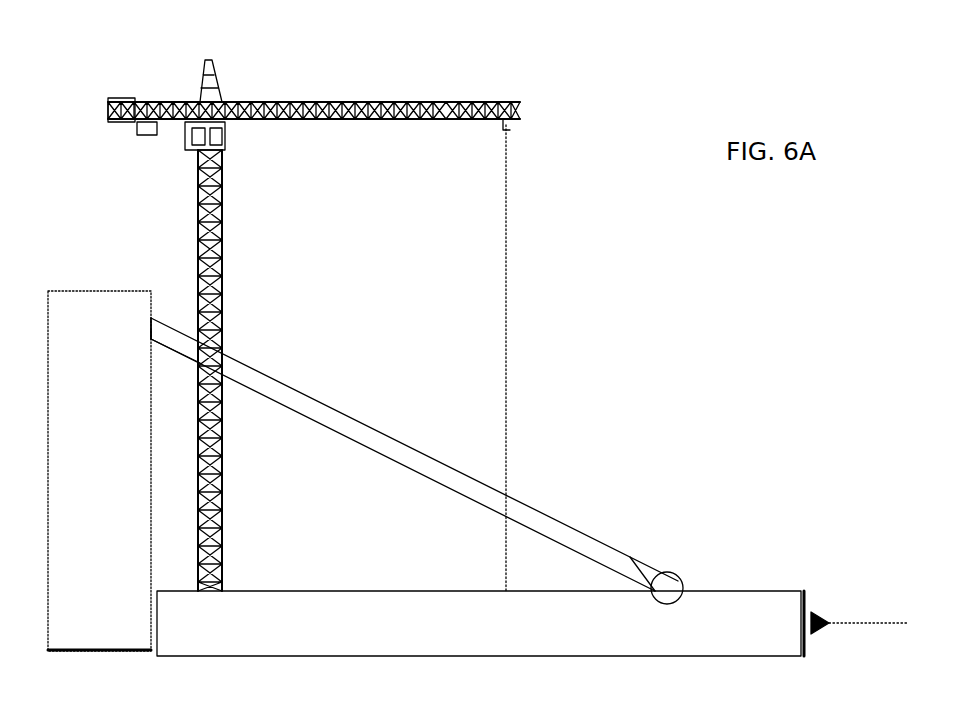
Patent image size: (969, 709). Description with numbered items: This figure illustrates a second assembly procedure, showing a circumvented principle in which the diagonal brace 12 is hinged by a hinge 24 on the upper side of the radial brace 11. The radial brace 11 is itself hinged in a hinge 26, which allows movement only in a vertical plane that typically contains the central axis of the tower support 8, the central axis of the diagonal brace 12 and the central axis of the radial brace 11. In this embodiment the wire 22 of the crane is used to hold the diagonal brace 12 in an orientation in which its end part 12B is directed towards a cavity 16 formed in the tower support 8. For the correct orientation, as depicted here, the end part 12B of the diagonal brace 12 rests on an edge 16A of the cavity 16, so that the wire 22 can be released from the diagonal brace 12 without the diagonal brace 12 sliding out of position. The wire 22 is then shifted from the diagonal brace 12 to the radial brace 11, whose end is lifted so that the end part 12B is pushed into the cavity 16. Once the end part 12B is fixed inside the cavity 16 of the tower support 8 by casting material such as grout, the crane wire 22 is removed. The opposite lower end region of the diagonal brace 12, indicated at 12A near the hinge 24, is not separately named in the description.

The tower support 8 is at (103, 480).
The radial brace 11 is at (773, 591).
The diagonal brace 12 is at (402, 437).
The beam lower end 12A is at (665, 532).
The end part of the diagonal brace 12B is at (160, 363).
The cavity 16 is at (137, 322).
The edge of the cavity 16A is at (143, 342).
The wire 22 is at (506, 287).
The hinge 24 is at (672, 585).
The hinge 26 is at (141, 618).